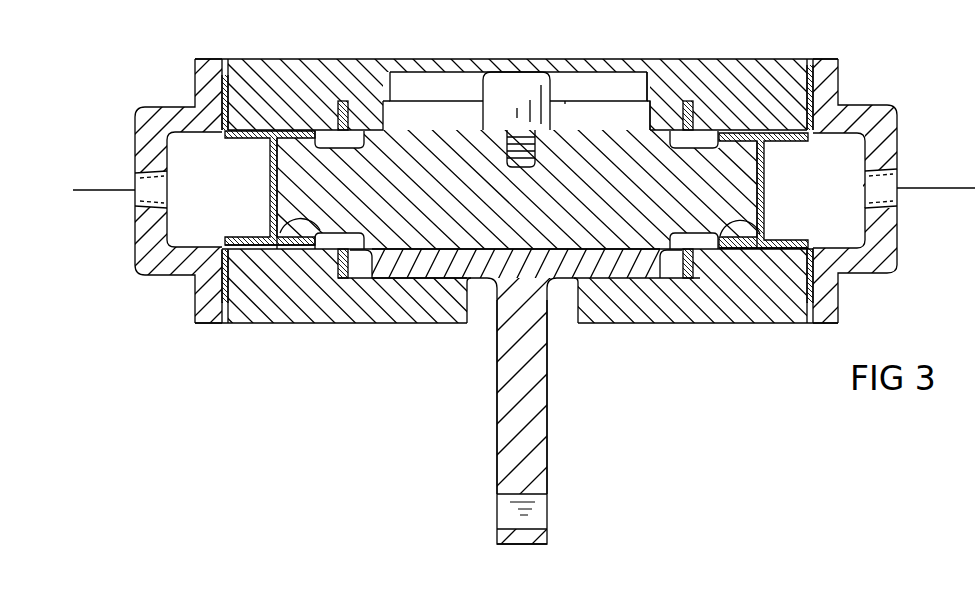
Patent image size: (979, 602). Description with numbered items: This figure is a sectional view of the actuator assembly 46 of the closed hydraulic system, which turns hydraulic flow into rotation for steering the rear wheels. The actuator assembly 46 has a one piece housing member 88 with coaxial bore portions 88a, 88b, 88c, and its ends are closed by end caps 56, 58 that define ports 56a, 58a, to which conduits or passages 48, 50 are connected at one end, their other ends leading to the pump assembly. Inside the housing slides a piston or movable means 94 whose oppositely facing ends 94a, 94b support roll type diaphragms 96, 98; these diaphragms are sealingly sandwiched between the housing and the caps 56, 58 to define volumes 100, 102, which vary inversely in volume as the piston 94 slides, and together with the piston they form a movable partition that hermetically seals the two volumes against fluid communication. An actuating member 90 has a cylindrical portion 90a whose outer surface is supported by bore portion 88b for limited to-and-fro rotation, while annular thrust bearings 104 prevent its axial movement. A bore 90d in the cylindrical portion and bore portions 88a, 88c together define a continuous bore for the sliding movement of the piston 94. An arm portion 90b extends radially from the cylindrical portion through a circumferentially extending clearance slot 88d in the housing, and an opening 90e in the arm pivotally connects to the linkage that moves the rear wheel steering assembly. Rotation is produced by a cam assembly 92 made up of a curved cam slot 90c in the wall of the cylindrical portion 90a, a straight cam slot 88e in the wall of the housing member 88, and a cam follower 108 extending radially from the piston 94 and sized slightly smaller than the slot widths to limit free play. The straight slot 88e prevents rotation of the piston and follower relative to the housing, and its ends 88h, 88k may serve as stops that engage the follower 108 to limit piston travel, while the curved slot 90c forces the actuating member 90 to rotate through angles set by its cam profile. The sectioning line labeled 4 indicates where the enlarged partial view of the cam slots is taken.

The section line 4 is at (569, 88).
The actuator assembly 46 is at (248, 336).
The conduit 48 is at (103, 191).
The conduit 50 is at (927, 188).
The end cap 56 is at (170, 112).
The port 56a is at (135, 183).
The end cap 58 is at (868, 117).
The port 58a is at (903, 200).
The housing member 88 is at (698, 337).
The bore portion 88a is at (300, 200).
The bore portion 88b is at (360, 274).
The bore portion 88c is at (747, 207).
The clearance slot 88d is at (573, 304).
The straight cam slot 88e is at (425, 74).
The end of straight slot 88h is at (405, 88).
The end of straight slot 88k is at (642, 82).
The actuating member 90 is at (484, 413).
The cylindrical portion 90a is at (403, 279).
The arm portion 90b is at (533, 432).
The curved cam slot 90c is at (592, 97).
The bore 90d is at (450, 250).
The opening 90e is at (528, 532).
The cam assembly 92 is at (656, 73).
The piston 94 is at (642, 246).
The piston end 94a is at (282, 162).
The piston end 94b is at (762, 160).
The roll type diaphragm 96 is at (280, 237).
The roll type diaphragm 98 is at (767, 240).
The volume 100 is at (175, 140).
The volume 102 is at (857, 143).
The annular thrust bearing 104 is at (342, 102).
The cam follower 108 is at (492, 88).